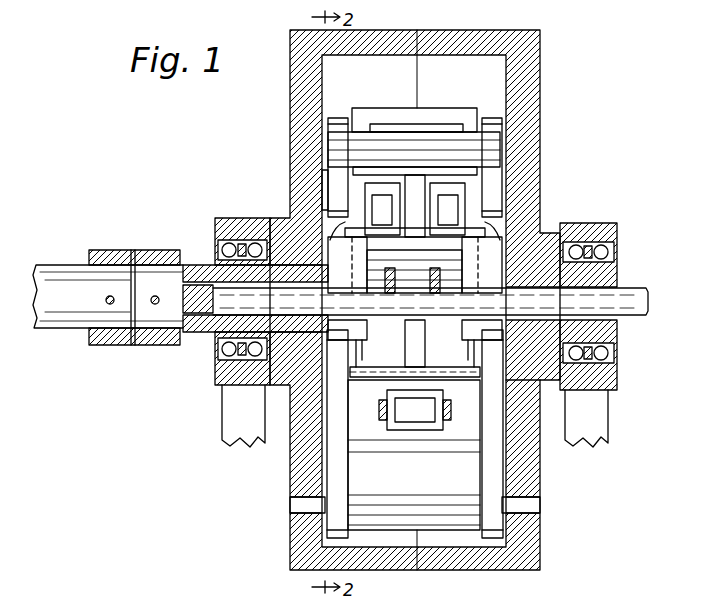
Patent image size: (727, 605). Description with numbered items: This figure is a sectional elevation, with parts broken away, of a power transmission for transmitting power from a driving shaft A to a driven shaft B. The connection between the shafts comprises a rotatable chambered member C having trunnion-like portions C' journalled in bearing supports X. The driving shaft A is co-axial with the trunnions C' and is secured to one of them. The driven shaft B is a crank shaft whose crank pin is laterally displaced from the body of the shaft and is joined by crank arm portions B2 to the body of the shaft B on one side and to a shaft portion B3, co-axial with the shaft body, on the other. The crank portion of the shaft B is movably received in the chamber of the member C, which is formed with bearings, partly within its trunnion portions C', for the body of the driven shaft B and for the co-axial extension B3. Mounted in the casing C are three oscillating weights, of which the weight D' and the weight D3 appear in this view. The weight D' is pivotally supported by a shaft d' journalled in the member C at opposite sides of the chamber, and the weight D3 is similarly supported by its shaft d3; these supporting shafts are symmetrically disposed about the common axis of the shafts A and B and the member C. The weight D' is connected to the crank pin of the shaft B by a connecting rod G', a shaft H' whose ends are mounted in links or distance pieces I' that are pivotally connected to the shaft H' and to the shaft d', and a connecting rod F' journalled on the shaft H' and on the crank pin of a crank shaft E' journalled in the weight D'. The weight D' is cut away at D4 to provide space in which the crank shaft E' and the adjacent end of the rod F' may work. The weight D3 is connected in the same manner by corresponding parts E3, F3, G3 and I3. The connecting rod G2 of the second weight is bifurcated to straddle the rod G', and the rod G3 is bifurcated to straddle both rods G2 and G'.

The driving shaft A is at (70, 308).
The driven shaft B is at (640, 300).
The crank arm portions B2 is at (415, 265).
The shaft portion B3 is at (230, 302).
The chambered member C is at (404, 300).
The trunnion-like portions C' is at (431, 293).
The weight D' is at (451, 117).
The weight D3 is at (414, 455).
The cut-away portion D4 is at (388, 125).
The supporting shaft d' is at (293, 189).
The supporting shaft d3 is at (525, 505).
The crank shaft E' is at (466, 243).
The crank shaft E3 is at (392, 414).
The connecting rod F' is at (472, 188).
The connecting rod F3 is at (372, 376).
The connecting rod G' is at (462, 202).
The connecting rod G2 is at (500, 240).
The connecting rod G3 is at (520, 410).
The shaft H' is at (466, 177).
The links I' is at (418, 153).
The links I3 is at (335, 470).
The bearing supports X is at (245, 440).